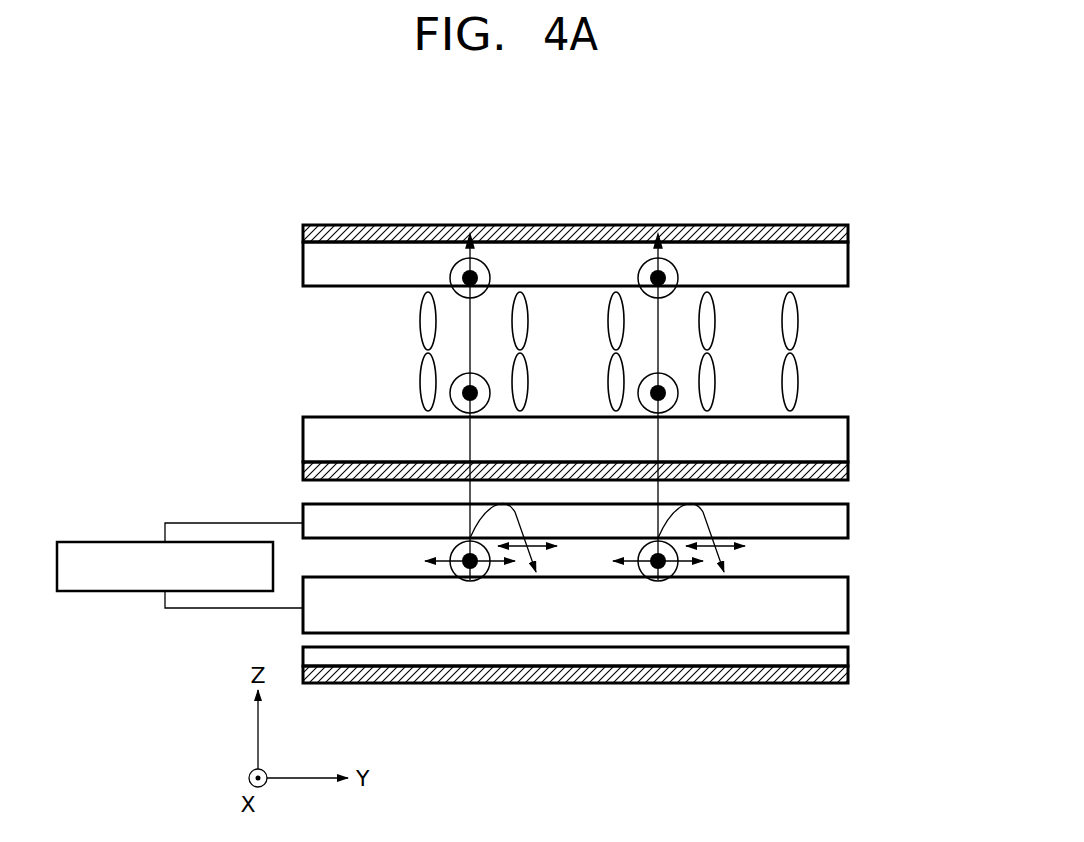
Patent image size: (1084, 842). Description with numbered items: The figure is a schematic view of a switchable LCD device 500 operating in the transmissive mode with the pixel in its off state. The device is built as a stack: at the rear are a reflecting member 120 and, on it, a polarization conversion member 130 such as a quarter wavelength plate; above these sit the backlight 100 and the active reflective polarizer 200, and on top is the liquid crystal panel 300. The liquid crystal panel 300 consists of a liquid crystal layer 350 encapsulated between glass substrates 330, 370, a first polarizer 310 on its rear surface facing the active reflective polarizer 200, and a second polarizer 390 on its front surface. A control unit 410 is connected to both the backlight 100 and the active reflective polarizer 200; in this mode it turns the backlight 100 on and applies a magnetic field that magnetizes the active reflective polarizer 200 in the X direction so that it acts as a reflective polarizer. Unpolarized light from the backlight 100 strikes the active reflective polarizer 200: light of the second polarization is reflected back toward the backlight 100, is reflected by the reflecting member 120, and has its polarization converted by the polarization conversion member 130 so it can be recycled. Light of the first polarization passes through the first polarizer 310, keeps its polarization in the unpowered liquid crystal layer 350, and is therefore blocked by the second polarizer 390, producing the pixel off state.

The switchable LCD device 500 is at (830, 178).
The liquid crystal panel 300 is at (295, 226).
The second polarizer 390 is at (848, 234).
The glass substrate 370 is at (848, 265).
The liquid crystal layer 350 is at (846, 354).
The glass substrate 330 is at (848, 445).
The first polarizer 310 is at (848, 475).
The active reflective polarizer 200 is at (848, 518).
The backlight 100 is at (848, 610).
The polarization conversion member 130 is at (848, 655).
The reflecting member 120 is at (848, 678).
The control unit 410 is at (116, 540).